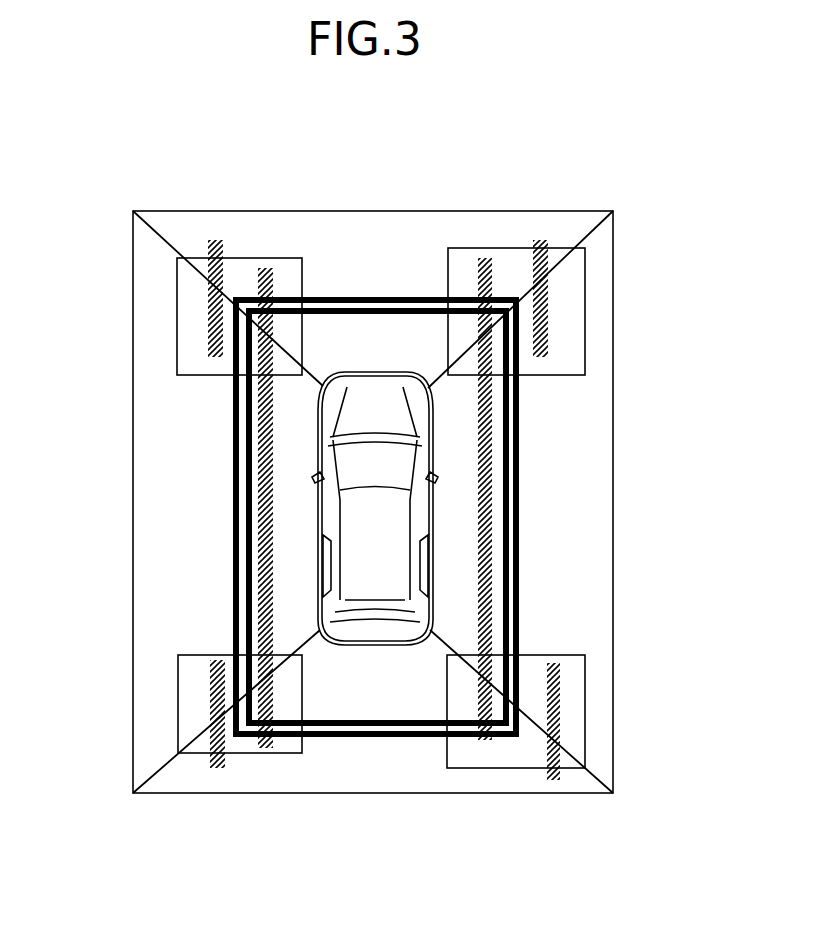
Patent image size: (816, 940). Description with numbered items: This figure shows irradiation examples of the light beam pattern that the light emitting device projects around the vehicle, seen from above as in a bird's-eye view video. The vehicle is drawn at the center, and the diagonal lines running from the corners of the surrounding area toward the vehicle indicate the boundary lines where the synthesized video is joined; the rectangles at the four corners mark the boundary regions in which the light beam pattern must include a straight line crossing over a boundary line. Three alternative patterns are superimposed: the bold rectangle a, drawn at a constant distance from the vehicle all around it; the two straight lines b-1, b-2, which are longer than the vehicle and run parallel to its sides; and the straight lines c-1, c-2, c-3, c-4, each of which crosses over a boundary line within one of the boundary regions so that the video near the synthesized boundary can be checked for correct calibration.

The vehicle surrounding image display region a is at (520, 467).
The straight line b-1 is at (262, 555).
The straight line b-2 is at (490, 553).
The straight line c-1 is at (215, 312).
The straight line c-2 is at (545, 312).
The straight line c-3 is at (212, 695).
The straight line c-4 is at (555, 715).